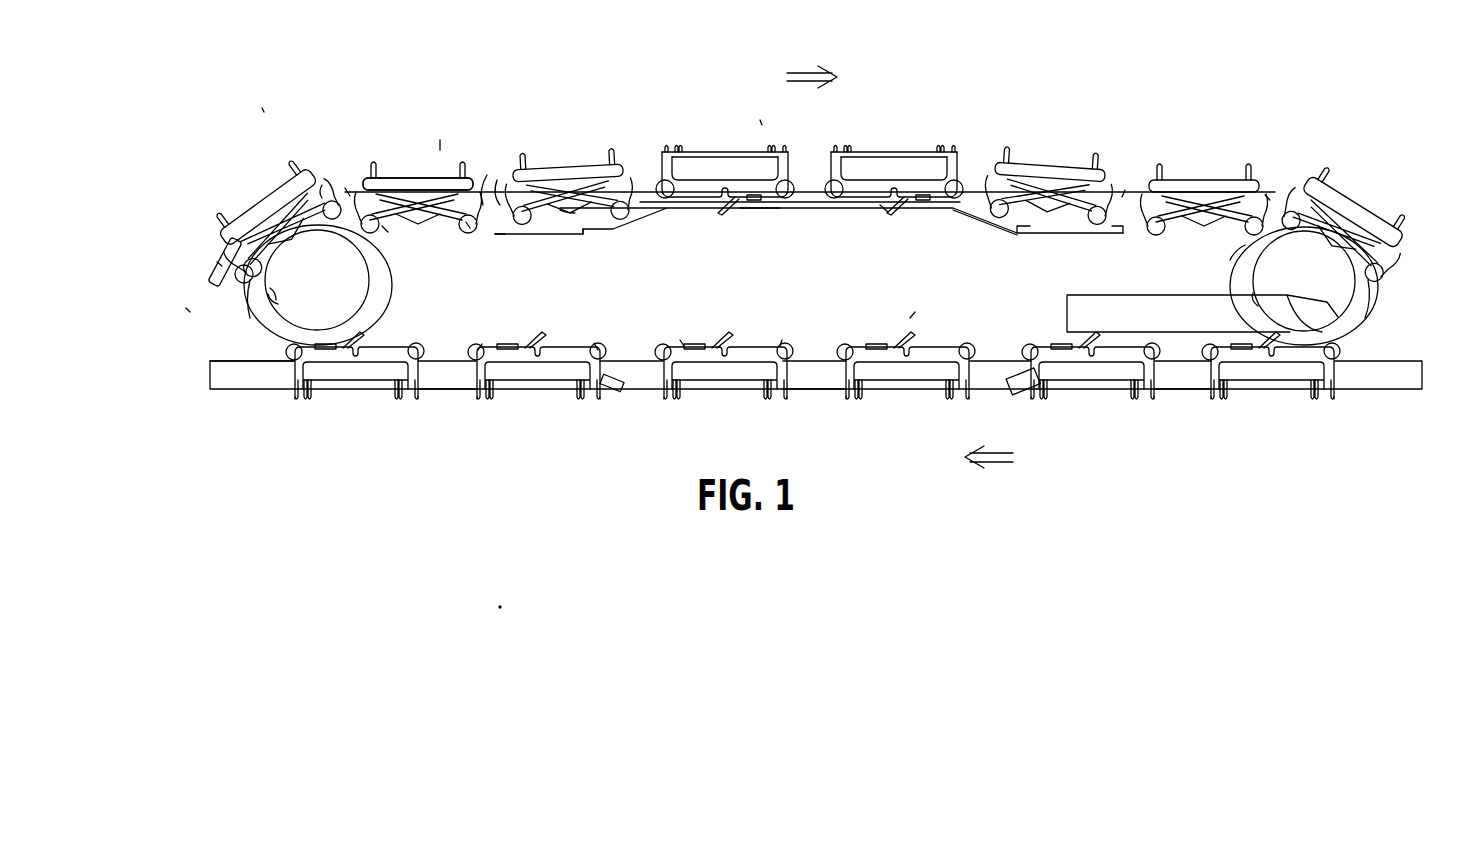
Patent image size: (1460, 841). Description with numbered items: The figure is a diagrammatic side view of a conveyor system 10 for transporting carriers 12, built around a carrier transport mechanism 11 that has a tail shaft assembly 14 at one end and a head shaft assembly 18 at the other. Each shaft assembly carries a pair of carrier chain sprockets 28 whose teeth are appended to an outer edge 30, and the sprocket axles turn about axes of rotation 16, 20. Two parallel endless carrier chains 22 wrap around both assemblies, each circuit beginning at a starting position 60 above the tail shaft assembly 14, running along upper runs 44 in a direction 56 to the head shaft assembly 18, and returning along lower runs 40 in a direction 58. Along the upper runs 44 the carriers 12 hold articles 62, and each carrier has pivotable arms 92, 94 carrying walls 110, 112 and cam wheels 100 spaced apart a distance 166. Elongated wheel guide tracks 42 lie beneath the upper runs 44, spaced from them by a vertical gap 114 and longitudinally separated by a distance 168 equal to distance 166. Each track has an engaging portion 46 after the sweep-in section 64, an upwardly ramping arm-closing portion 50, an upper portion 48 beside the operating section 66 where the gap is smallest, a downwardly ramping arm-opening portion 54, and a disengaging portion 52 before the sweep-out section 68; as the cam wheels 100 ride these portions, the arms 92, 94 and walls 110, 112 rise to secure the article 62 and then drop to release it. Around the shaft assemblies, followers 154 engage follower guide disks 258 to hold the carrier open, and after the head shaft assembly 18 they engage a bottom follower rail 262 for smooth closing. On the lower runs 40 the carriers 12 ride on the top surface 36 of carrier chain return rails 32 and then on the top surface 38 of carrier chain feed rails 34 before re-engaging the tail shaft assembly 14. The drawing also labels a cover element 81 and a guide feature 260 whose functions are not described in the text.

The conveyor system 10 is at (262, 105).
The carrier transport mechanism 11 is at (185, 305).
The carrier 12 is at (240, 200).
The tail shaft assembly 14 is at (417, 277).
The axis of rotation 16 is at (320, 265).
The head shaft assembly 18 is at (1220, 250).
The axis of rotation 20 is at (1305, 275).
The carrier chain 22 is at (1265, 195).
The carrier chain sprocket 28 is at (250, 317).
The outer edge 30 is at (392, 298).
The carrier chain return rail 32 is at (1182, 389).
The carrier chain feed rail 34 is at (458, 387).
The top surface 36 is at (1380, 360).
The top surface 38 is at (237, 358).
The lower run 40 is at (810, 390).
The wheel guide track 42 is at (541, 234).
The upper run 44 is at (345, 188).
The engaging portion 46 is at (505, 236).
The upper portion 48 is at (760, 212).
The arm-closing portion 50 is at (562, 211).
The disengaging portion 52 is at (1027, 240).
The arm-opening portion 54 is at (980, 213).
The direction 56 is at (800, 77).
The direction 58 is at (993, 457).
The starting position 60 is at (383, 130).
The article 62 is at (565, 168).
The sweep-in section 64 is at (440, 132).
The operating section 66 is at (758, 115).
The sweep-out section 68 is at (1202, 143).
The cover plate 81 is at (413, 172).
The arm 92 is at (470, 228).
The arm 94 is at (388, 232).
The cam wheel 100 is at (482, 344).
The wall 110 is at (322, 185).
The wall 112 is at (217, 262).
The vertical gap 114 is at (811, 243).
The follower 154 is at (888, 212).
The distance 166 is at (478, 400).
The distance 168 is at (495, 200).
The follower guide disk 258 is at (275, 300).
The guide finger 260 is at (497, 200).
The bottom follower rail 262 is at (1067, 303).